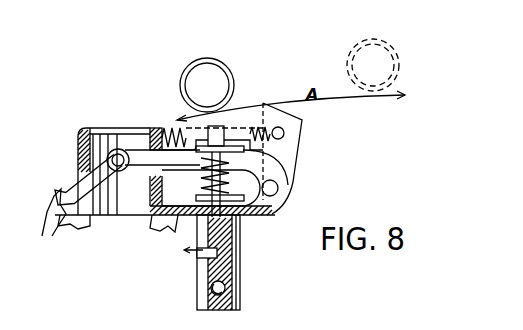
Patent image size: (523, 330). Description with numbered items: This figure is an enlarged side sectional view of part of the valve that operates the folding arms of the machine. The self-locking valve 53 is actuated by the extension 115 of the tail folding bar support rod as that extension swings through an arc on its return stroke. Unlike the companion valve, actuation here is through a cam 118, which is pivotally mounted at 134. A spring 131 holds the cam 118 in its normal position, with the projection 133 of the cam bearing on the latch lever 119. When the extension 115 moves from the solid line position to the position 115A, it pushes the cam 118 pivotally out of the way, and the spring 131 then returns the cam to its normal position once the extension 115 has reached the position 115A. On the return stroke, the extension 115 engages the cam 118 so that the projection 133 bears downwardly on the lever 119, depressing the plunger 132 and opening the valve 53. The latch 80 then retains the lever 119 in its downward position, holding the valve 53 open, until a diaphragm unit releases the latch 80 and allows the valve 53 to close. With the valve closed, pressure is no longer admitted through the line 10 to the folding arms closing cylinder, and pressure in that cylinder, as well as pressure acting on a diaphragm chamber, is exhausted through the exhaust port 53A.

The extension 115 is at (213, 60).
The position of extension 115A is at (349, 52).
The spring 131 is at (164, 128).
The cam 118 is at (306, 130).
The projection 133 is at (240, 146).
The pivot 134 is at (279, 188).
The plunger 132 is at (206, 187).
The latch lever 119 is at (67, 192).
The latch 80 is at (40, 216).
The self-locking valve 53 is at (242, 263).
The exhaust port 53A is at (199, 258).
The line 10 is at (211, 288).